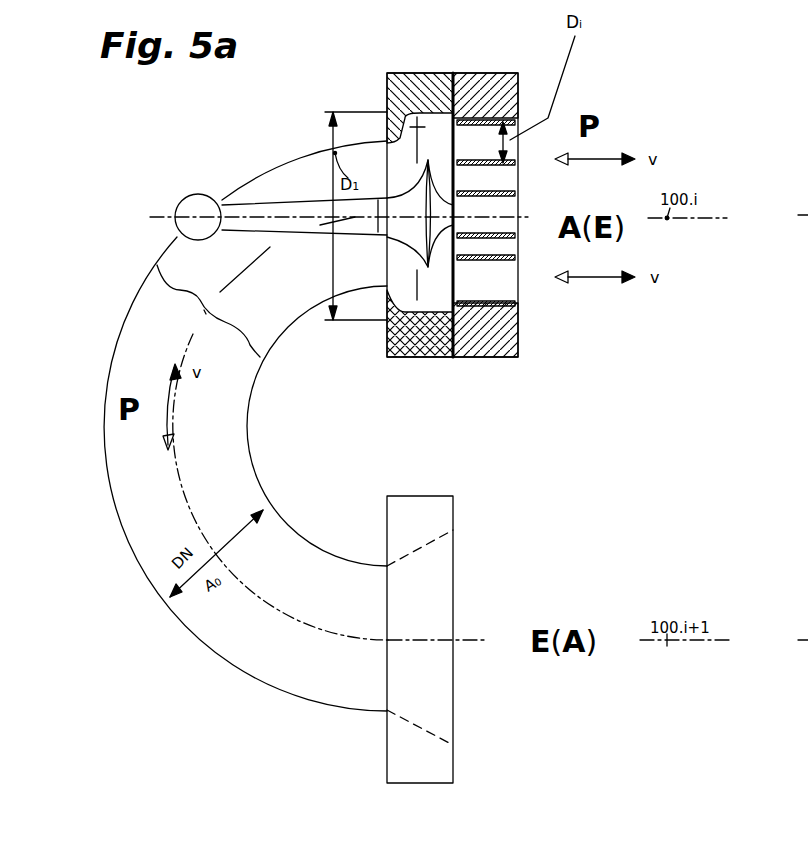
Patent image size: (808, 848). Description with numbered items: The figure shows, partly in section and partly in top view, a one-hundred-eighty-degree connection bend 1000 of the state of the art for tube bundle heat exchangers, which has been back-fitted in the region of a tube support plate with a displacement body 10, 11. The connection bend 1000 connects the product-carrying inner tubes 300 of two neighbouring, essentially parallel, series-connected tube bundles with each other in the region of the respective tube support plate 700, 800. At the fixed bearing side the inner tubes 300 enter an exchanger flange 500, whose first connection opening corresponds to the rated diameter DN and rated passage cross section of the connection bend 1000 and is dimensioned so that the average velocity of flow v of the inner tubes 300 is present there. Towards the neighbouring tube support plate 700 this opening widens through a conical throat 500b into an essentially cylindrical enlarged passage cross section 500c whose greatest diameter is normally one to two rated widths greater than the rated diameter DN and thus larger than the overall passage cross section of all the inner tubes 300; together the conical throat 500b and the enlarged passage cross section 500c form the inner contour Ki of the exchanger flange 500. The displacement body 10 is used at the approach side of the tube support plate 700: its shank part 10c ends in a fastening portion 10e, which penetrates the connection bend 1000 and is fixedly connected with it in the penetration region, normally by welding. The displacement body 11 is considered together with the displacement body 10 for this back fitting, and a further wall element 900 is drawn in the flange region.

The displacement body 10 is at (239, 249).
The displacement body 11 is at (234, 249).
The shank part 10c is at (278, 210).
The fastening portion 10e is at (188, 208).
The exchanger flange 500 is at (419, 225).
The conical throat 500b is at (390, 346).
The enlarged passage cross section 500c is at (432, 318).
The separating wall 900 is at (450, 100).
The inner tube 300 is at (488, 122).
The tube support plate 700 is at (505, 325).
The tube support plate 800 is at (460, 637).
The connection bend 1000 is at (243, 677).